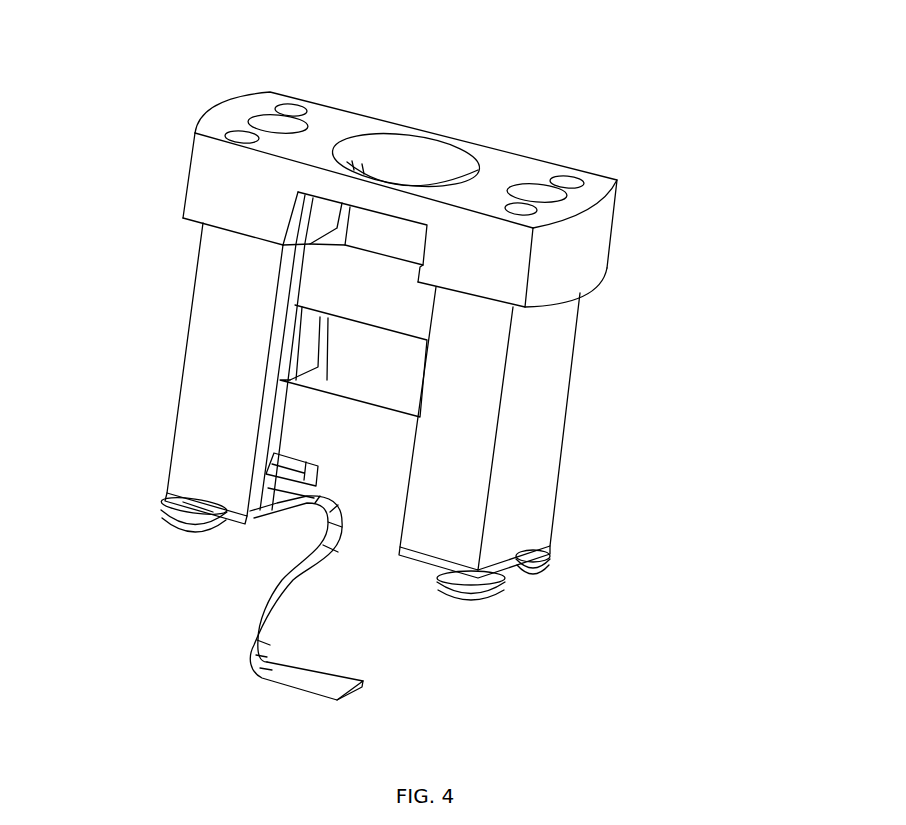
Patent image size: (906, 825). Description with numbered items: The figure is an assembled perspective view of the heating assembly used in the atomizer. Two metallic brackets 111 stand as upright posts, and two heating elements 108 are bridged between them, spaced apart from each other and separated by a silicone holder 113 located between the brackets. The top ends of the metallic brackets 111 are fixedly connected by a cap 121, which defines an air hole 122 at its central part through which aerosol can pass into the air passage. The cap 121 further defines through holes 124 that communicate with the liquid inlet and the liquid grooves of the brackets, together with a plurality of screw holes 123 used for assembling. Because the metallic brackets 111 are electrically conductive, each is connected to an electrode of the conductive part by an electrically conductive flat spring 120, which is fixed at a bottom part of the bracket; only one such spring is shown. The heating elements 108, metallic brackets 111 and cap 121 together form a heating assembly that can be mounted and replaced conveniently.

The heating element 108 is at (370, 443).
The metallic bracket 111 is at (227, 283).
The silicone holder 113 is at (303, 346).
The electrically conductive flat spring 120 is at (283, 632).
The cap 121 is at (587, 240).
The air hole 122 is at (427, 157).
The screw hole 123 is at (293, 108).
The through hole 124 is at (273, 127).